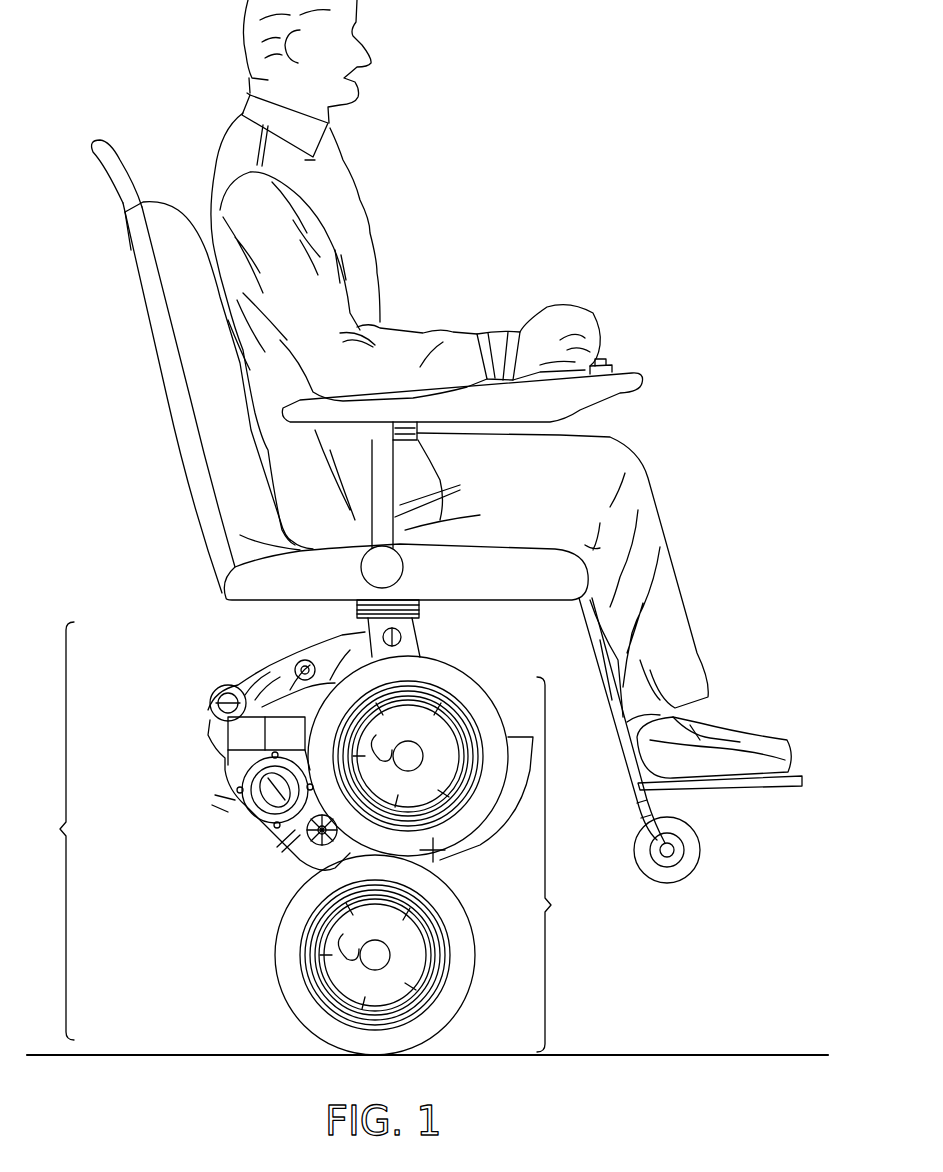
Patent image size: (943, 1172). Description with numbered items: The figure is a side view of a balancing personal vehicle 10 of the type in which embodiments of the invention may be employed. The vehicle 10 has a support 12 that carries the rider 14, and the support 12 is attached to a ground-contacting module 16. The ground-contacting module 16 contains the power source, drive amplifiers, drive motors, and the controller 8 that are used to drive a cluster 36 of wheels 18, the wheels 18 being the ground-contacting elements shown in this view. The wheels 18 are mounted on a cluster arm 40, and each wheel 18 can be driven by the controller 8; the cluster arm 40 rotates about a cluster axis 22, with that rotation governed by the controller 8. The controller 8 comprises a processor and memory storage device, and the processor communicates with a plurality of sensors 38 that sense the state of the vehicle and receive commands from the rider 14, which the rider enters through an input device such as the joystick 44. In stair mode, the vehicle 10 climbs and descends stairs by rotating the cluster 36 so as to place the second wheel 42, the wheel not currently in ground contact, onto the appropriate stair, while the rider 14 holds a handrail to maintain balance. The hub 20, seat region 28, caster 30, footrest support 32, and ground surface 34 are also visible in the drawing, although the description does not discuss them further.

The controller 8 is at (293, 705).
The balancing vehicle 10 is at (85, 327).
The support 12 is at (243, 583).
The rider 14 is at (233, 155).
The ground-contacting module 16 is at (50, 831).
The wheels 18 is at (452, 993).
The wheel hub 20 is at (376, 953).
The cluster axis 22 is at (430, 857).
The seat assembly 28 is at (501, 584).
The caster wheel 30 is at (685, 865).
The footrest support 32 is at (622, 768).
The ground surface 34 is at (781, 1055).
The cluster 36 is at (565, 864).
The sensors 38 is at (300, 860).
The cluster arm 40 is at (350, 853).
The second wheel 42 is at (453, 663).
The joystick 44 is at (612, 362).